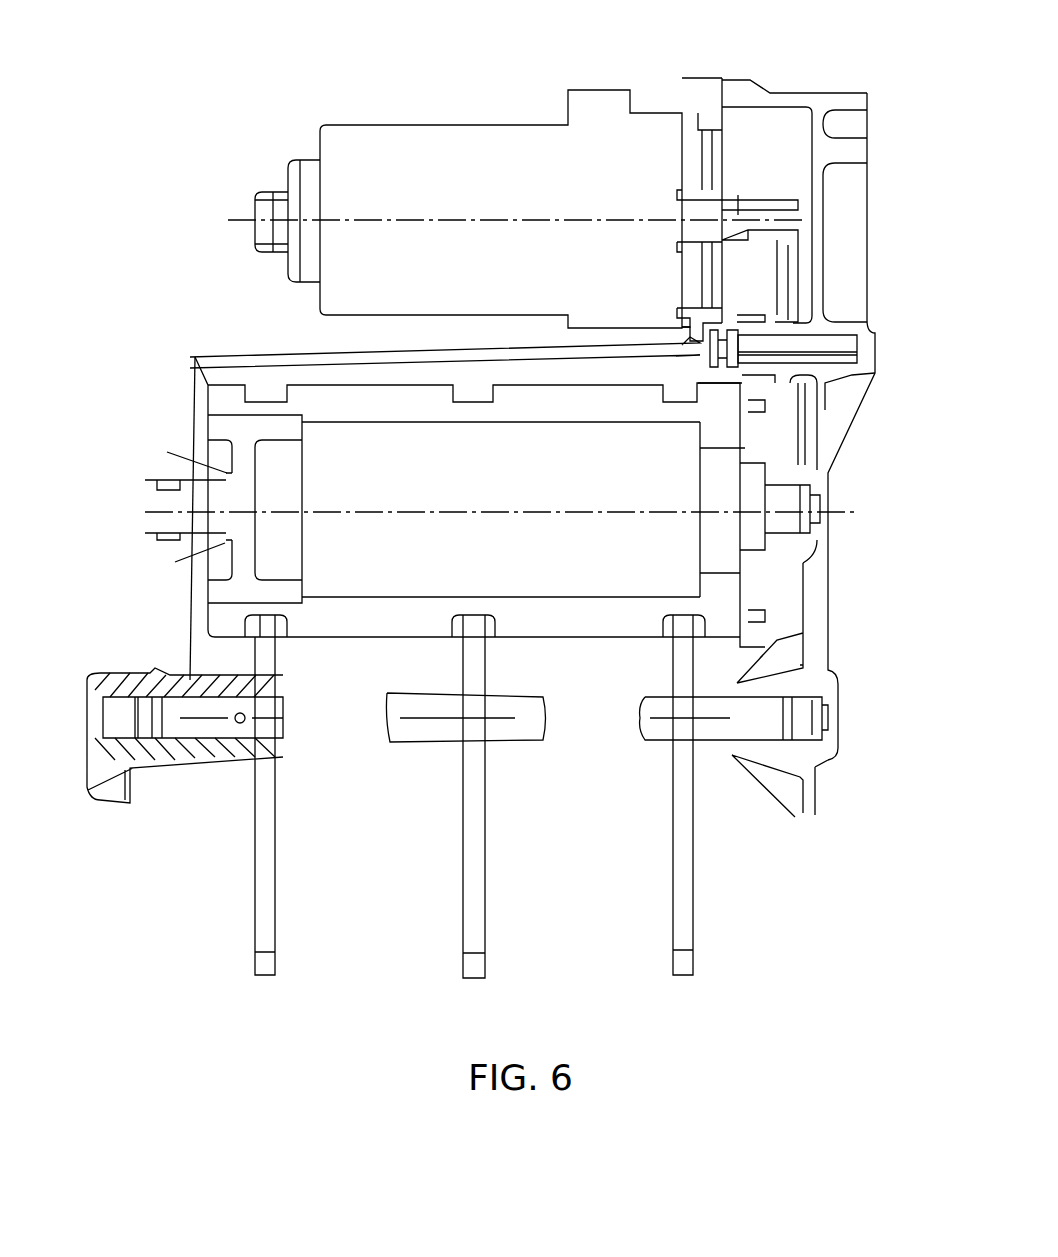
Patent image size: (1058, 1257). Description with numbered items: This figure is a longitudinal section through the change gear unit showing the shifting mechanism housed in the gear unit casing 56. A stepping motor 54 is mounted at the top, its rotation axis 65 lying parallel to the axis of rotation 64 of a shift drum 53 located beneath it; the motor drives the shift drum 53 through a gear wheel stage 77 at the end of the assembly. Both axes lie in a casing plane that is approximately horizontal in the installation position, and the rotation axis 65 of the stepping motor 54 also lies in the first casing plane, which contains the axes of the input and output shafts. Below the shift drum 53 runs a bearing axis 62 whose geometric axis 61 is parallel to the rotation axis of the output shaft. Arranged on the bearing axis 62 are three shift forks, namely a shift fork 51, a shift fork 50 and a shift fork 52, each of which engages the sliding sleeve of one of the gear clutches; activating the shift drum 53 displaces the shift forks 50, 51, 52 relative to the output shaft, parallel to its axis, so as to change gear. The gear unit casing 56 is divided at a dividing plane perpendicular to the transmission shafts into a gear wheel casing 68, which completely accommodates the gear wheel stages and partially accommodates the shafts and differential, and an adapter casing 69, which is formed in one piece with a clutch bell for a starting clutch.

The shift fork 50 is at (488, 877).
The shift fork 51 is at (277, 880).
The shift fork 52 is at (695, 878).
The shift drum 53 is at (300, 383).
The stepping motor 54 is at (368, 118).
The gear unit casing 56 is at (792, 90).
The geometric axis 61 is at (100, 790).
The bearing axis 62 is at (213, 747).
The axis of rotation 64 is at (150, 515).
The rotation axis 65 is at (238, 217).
The gear wheel casing 68 is at (198, 356).
The adapter casing 69 is at (850, 105).
The gear wheel stage 77 is at (797, 285).